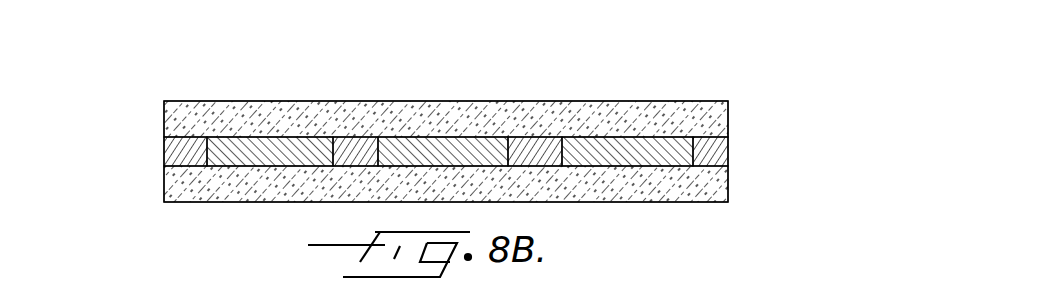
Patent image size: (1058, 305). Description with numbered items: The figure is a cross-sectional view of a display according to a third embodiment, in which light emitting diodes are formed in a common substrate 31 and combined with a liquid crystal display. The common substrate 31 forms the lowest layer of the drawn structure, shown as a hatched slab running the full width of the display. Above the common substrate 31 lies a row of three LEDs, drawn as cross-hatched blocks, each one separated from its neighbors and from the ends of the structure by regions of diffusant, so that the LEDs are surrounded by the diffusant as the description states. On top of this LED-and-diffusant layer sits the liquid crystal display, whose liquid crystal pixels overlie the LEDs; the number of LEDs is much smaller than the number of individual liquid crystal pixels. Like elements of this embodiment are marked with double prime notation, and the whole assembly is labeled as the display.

The common substrate 31 is at (212, 198).